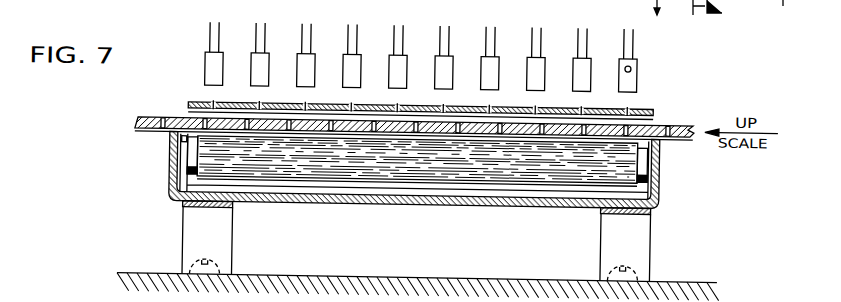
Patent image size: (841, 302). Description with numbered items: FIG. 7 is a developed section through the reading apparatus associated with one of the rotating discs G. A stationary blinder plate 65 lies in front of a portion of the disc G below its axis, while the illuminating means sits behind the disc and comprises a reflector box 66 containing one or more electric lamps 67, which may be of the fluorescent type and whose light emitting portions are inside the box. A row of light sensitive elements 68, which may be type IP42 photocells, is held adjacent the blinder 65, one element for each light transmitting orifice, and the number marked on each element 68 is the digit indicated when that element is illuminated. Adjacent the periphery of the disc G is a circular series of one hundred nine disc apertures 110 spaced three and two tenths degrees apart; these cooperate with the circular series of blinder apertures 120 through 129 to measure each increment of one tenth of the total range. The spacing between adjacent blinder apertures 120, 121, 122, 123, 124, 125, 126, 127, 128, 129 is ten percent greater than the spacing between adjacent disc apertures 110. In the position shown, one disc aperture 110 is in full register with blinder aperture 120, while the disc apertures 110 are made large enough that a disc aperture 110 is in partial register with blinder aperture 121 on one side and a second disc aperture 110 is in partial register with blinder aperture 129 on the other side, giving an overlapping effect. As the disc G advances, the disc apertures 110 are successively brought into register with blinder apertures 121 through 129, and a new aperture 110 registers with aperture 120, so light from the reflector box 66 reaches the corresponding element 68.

The blinder plate 65 is at (328, 101).
The reflector box 66 is at (453, 200).
The electric lamp 67 is at (352, 155).
The light sensitive element 68 is at (204, 62).
The disc aperture 110 is at (207, 117).
The blinder aperture 120 is at (628, 100).
The blinder aperture 121 is at (582, 100).
The blinder aperture 122 is at (536, 100).
The blinder aperture 123 is at (490, 100).
The blinder aperture 124 is at (444, 100).
The blinder aperture 125 is at (398, 100).
The blinder aperture 126 is at (352, 100).
The blinder aperture 127 is at (306, 100).
The blinder aperture 128 is at (260, 100).
The blinder aperture 129 is at (213, 101).
The disc G is at (146, 131).